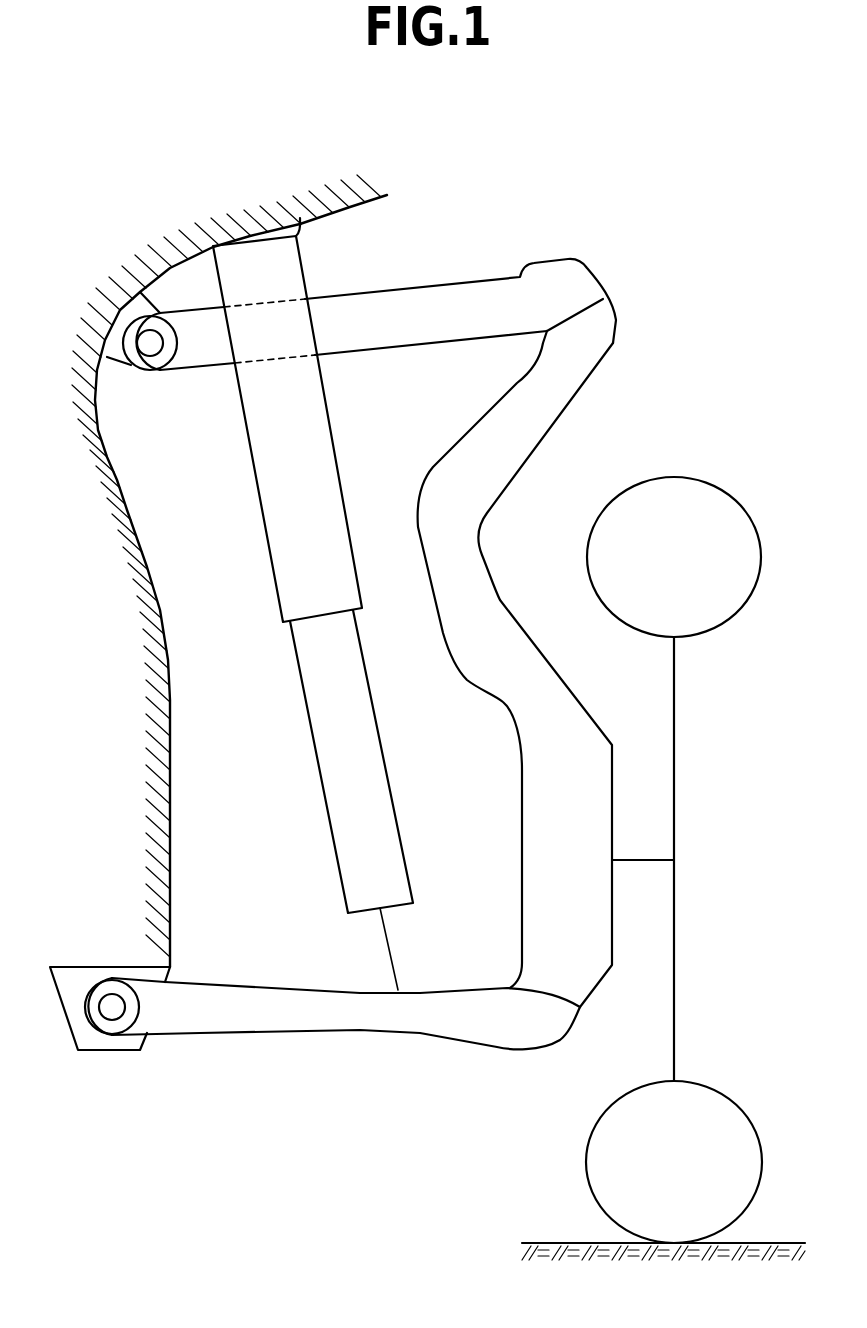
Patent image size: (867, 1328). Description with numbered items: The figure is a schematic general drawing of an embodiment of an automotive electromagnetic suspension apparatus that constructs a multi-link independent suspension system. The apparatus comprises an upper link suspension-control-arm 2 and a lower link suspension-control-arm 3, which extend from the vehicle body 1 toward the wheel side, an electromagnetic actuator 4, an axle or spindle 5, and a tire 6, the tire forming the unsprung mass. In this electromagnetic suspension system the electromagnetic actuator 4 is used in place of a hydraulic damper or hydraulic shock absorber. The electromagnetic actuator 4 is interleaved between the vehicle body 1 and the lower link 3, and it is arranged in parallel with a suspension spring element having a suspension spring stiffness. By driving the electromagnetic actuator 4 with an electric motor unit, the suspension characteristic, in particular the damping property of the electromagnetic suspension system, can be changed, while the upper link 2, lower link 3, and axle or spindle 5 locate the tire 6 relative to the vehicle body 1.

The vehicle body 1 is at (334, 208).
The upper link suspension-control-arm 2 is at (477, 290).
The lower link suspension-control-arm 3 is at (355, 1020).
The electromagnetic actuator 4 is at (344, 450).
The axle or spindle 5 is at (563, 708).
The tire 6 is at (675, 503).